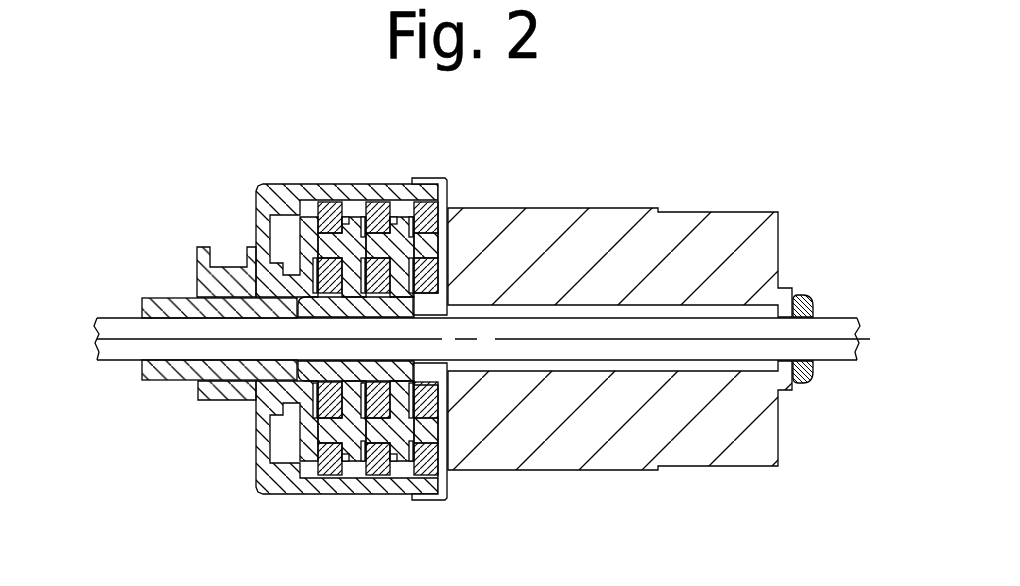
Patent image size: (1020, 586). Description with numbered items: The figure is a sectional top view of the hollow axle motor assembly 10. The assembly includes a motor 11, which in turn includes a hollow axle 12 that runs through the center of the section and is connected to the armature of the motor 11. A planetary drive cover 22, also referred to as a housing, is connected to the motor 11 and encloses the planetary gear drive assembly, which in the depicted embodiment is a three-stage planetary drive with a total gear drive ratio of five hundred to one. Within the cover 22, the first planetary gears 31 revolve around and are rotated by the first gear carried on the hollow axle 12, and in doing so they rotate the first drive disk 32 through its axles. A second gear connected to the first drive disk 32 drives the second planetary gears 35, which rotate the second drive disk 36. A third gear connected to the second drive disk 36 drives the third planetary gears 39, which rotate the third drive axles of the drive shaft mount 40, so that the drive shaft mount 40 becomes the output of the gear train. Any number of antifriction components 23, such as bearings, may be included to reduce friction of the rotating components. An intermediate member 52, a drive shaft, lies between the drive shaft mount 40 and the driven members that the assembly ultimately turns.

The hollow axle motor assembly 10 is at (634, 139).
The motor 11 is at (647, 208).
The hollow axle 12 is at (637, 362).
The planetary drive cover 22 is at (272, 184).
The antifriction component 23 is at (810, 295).
The first planetary gears 31 is at (363, 202).
The first drive disk 32 is at (366, 458).
The second planetary gears 35 is at (405, 202).
The second drive disk 36 is at (402, 462).
The third planetary gears 39 is at (458, 200).
The drive shaft mount 40 is at (175, 380).
The intermediate member 52 is at (122, 318).